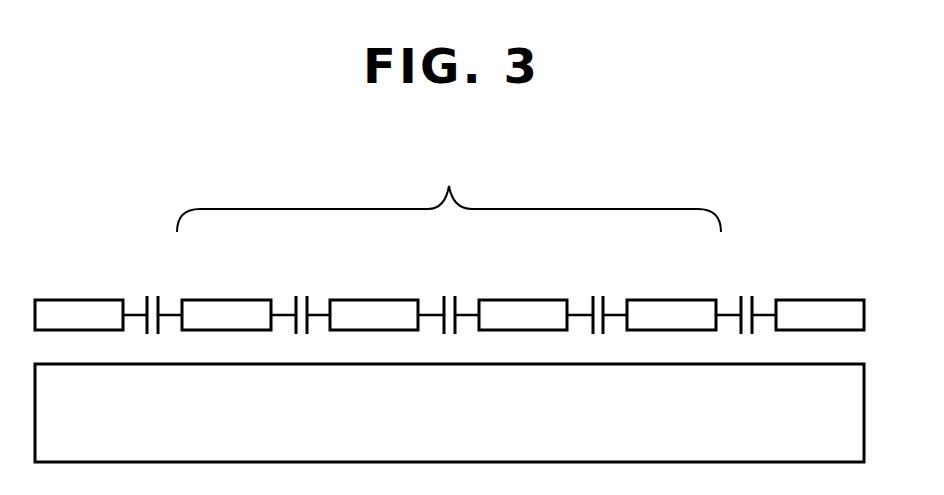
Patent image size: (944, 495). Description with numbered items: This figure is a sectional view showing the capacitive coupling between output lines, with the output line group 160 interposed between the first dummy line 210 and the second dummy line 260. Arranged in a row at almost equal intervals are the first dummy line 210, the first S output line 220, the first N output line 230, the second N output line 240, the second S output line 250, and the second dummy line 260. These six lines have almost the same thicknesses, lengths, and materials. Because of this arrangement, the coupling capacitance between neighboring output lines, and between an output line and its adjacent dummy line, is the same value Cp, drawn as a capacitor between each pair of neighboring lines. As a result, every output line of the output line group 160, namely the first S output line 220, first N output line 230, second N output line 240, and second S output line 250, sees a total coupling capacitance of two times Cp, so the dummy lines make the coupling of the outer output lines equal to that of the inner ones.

The output line group 160 is at (449, 193).
The first dummy line 210 is at (81, 298).
The first S output line 220 is at (228, 298).
The first N output line 230 is at (376, 298).
The second N output line 240 is at (525, 298).
The second S output line 250 is at (673, 298).
The second dummy line 260 is at (822, 298).
The coupling capacitance Cp is at (153, 294).